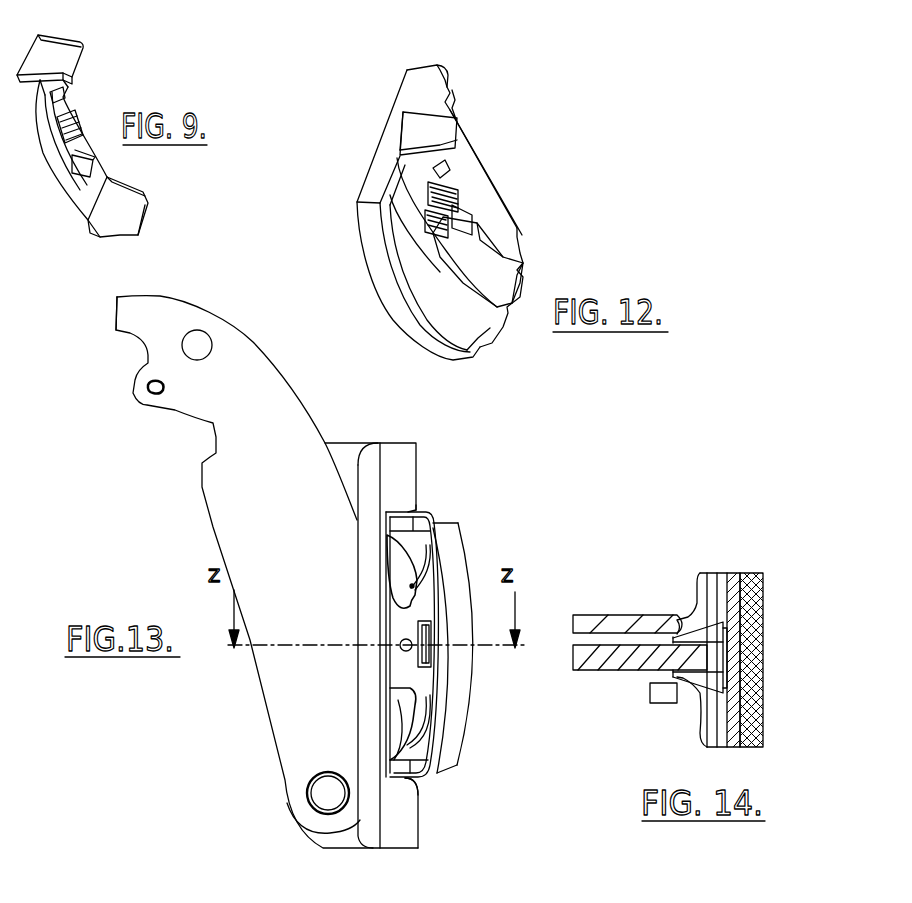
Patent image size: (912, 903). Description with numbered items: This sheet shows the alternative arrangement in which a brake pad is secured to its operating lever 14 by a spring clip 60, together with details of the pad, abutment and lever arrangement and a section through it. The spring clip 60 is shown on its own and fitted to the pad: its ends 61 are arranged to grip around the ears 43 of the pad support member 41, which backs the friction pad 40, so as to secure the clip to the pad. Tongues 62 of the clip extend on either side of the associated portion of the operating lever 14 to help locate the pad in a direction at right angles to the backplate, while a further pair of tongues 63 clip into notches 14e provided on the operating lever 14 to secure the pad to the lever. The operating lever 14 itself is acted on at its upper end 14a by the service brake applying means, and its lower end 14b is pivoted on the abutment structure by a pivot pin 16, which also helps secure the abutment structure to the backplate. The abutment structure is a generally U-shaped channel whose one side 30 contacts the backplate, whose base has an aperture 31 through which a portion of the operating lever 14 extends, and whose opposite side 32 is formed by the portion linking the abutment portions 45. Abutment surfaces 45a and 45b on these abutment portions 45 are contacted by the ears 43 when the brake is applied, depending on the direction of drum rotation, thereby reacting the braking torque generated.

In FIG. 13, the operating lever 14 is at (237, 535).
In FIG. 14, the operating lever 14 is at (618, 658).
In FIG. 13, the upper end of operating lever 14a is at (115, 320).
In FIG. 13, the lower end of operating lever 14b is at (313, 815).
In FIG. 13, the notches 14e is at (408, 608).
In FIG. 13, the pivot pin 16 is at (323, 788).
In FIG. 14, the side of abutment structure 30 is at (613, 623).
In FIG. 14, the aperture 31 is at (682, 692).
In FIG. 14, the opposite side of channel structure 32 is at (677, 683).
In FIG. 12, the friction pad 40 is at (380, 172).
In FIG. 13, the friction pad 40 is at (450, 735).
In FIG. 14, the friction pad 40 is at (755, 597).
In FIG. 12, the backing/support member 41 is at (395, 258).
In FIG. 13, the backing/support member 41 is at (427, 747).
In FIG. 14, the backing/support member 41 is at (733, 575).
In FIG. 12, the ears 43 is at (437, 105).
In FIG. 13, the abutment portions 45 is at (398, 466).
In FIG. 13, the abutment surface 45a is at (410, 510).
In FIG. 13, the abutment surface 45b is at (417, 800).
In FIG. 12, the spring clip 60 is at (497, 272).
In FIG. 9, the ends of clip 61 is at (53, 50).
In FIG. 12, the ends of clip 61 is at (430, 128).
In FIG. 9, the tongues 62 is at (110, 124).
In FIG. 12, the tongues 62 is at (440, 215).
In FIG. 13, the tongues 62 is at (430, 657).
In FIG. 14, the tongues 62 is at (715, 643).
In FIG. 9, the tongues 63 is at (65, 98).
In FIG. 12, the tongues 63 is at (440, 165).
In FIG. 13, the tongues 63 is at (413, 585).